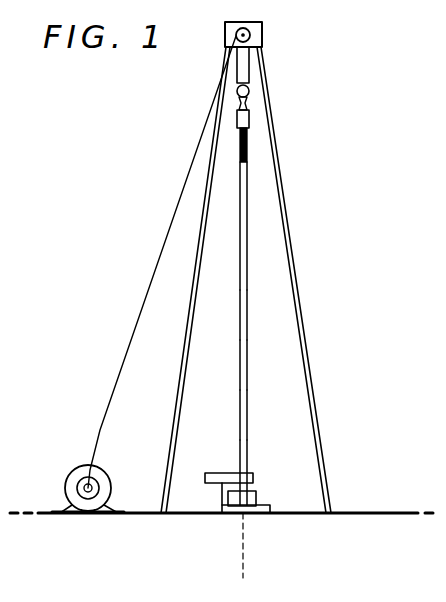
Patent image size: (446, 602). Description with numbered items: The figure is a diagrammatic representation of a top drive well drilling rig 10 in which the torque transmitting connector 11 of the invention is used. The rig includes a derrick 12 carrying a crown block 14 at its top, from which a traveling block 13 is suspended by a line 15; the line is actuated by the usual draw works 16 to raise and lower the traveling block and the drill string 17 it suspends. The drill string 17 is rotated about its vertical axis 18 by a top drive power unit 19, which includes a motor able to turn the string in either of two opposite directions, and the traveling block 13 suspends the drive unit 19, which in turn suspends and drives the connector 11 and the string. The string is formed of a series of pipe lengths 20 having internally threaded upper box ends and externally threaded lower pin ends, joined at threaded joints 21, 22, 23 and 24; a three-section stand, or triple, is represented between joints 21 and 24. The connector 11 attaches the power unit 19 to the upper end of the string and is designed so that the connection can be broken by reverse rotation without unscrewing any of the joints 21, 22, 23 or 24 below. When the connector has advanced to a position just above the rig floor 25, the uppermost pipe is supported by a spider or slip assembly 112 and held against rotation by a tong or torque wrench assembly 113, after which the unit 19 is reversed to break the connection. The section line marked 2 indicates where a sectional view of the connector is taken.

The drill rig 10 is at (302, 66).
The torque transmitting connector 11 is at (249, 128).
The derrick 12 is at (289, 237).
The traveling block 13 is at (249, 90).
The crown block 14 is at (238, 34).
The line 15 is at (236, 65).
The draw works 16 is at (78, 484).
The drill string 17 is at (252, 318).
The vertical axis 18 is at (246, 554).
The top drive power unit 19 is at (233, 116).
The pipe lengths 20 is at (240, 402).
The threaded joint 21 is at (249, 469).
The threaded joint 22 is at (248, 362).
The threaded joint 23 is at (238, 256).
The threaded joint 24 is at (249, 140).
The rig floor 25 is at (352, 513).
The spider or slip assembly 112 is at (232, 515).
The tong or torque wrench assembly 113 is at (204, 484).
The section line 2- 2 is at (228, 161).